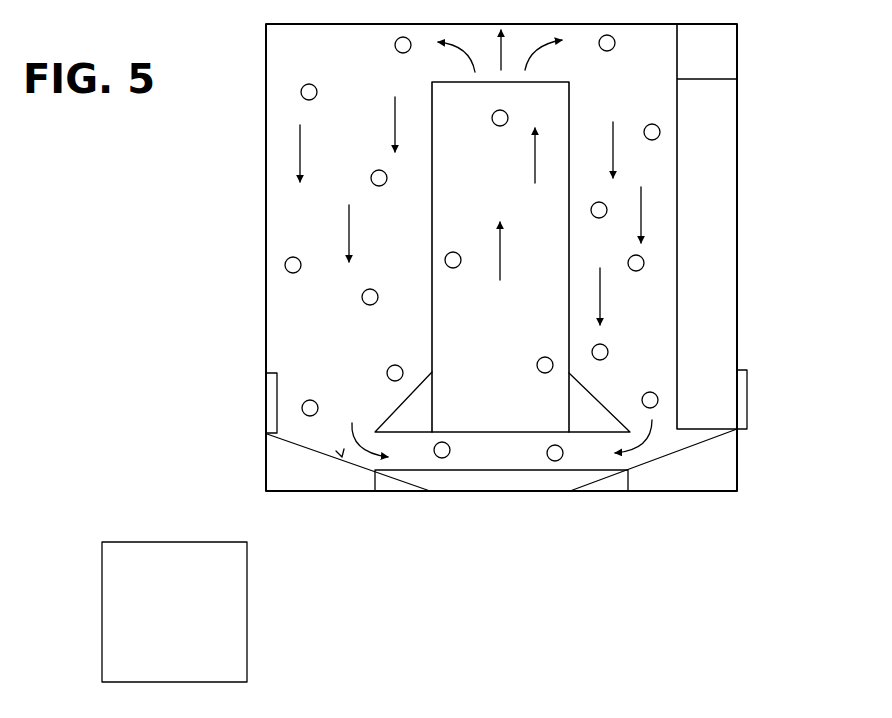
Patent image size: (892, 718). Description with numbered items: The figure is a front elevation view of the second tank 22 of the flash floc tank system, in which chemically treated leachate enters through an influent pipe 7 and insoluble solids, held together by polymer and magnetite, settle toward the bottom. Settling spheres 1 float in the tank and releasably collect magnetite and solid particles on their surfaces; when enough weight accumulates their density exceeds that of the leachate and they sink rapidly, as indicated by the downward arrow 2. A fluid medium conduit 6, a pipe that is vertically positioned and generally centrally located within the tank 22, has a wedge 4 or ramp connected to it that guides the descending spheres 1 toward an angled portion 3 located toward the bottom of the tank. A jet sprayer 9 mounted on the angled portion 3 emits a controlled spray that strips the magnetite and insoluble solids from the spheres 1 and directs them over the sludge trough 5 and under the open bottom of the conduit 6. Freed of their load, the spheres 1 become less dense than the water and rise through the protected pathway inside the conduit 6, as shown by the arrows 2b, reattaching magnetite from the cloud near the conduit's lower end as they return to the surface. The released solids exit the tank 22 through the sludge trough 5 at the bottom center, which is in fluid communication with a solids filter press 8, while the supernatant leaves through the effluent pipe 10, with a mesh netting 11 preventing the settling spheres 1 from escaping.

The settling spheres 1 is at (395, 46).
The downward arrow 2 is at (349, 222).
The arrows indicating rising spheres 2b is at (500, 252).
The angled portion 3 is at (290, 441).
The wedge 4 is at (388, 400).
The sludge trough 5 is at (504, 480).
The fluid medium conduit 6 is at (455, 322).
The influent pipe 7 is at (266, 403).
The solids filter press 8 is at (233, 613).
The jet sprayer 9 is at (342, 457).
The effluent pipe 10 is at (747, 397).
The mesh netting 11 is at (677, 45).
The second tank 22 is at (266, 207).